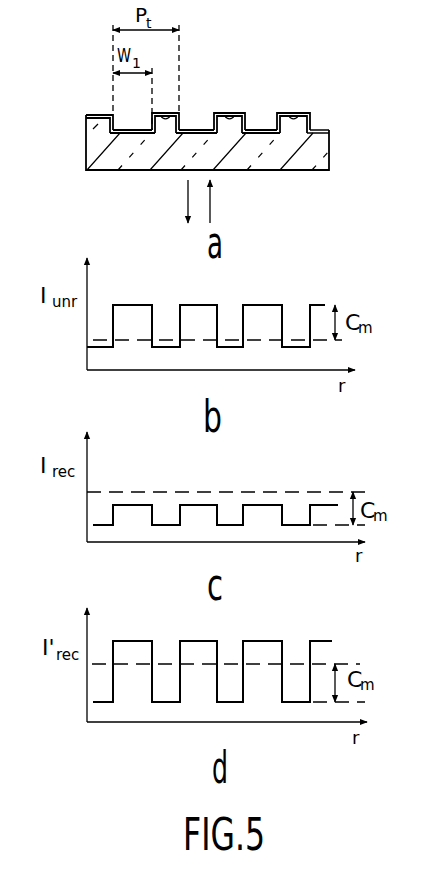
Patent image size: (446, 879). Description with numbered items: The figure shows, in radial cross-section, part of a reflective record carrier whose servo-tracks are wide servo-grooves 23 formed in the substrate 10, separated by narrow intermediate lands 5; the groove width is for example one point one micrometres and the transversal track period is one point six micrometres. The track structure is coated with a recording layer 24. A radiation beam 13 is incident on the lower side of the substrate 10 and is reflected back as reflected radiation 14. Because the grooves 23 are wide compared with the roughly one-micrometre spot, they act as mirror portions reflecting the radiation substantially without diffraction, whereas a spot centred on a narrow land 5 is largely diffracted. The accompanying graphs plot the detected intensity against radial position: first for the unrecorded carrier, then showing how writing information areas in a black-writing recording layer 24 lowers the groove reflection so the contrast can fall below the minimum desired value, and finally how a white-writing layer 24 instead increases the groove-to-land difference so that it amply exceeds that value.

The narrow intermediate land 5 is at (163, 122).
The substrate 10 is at (307, 165).
The incident radiation beam 13 is at (224, 201).
The reflected radiation 14 is at (173, 201).
The wide servo-groove 23 is at (129, 130).
The recording layer 24 is at (90, 114).